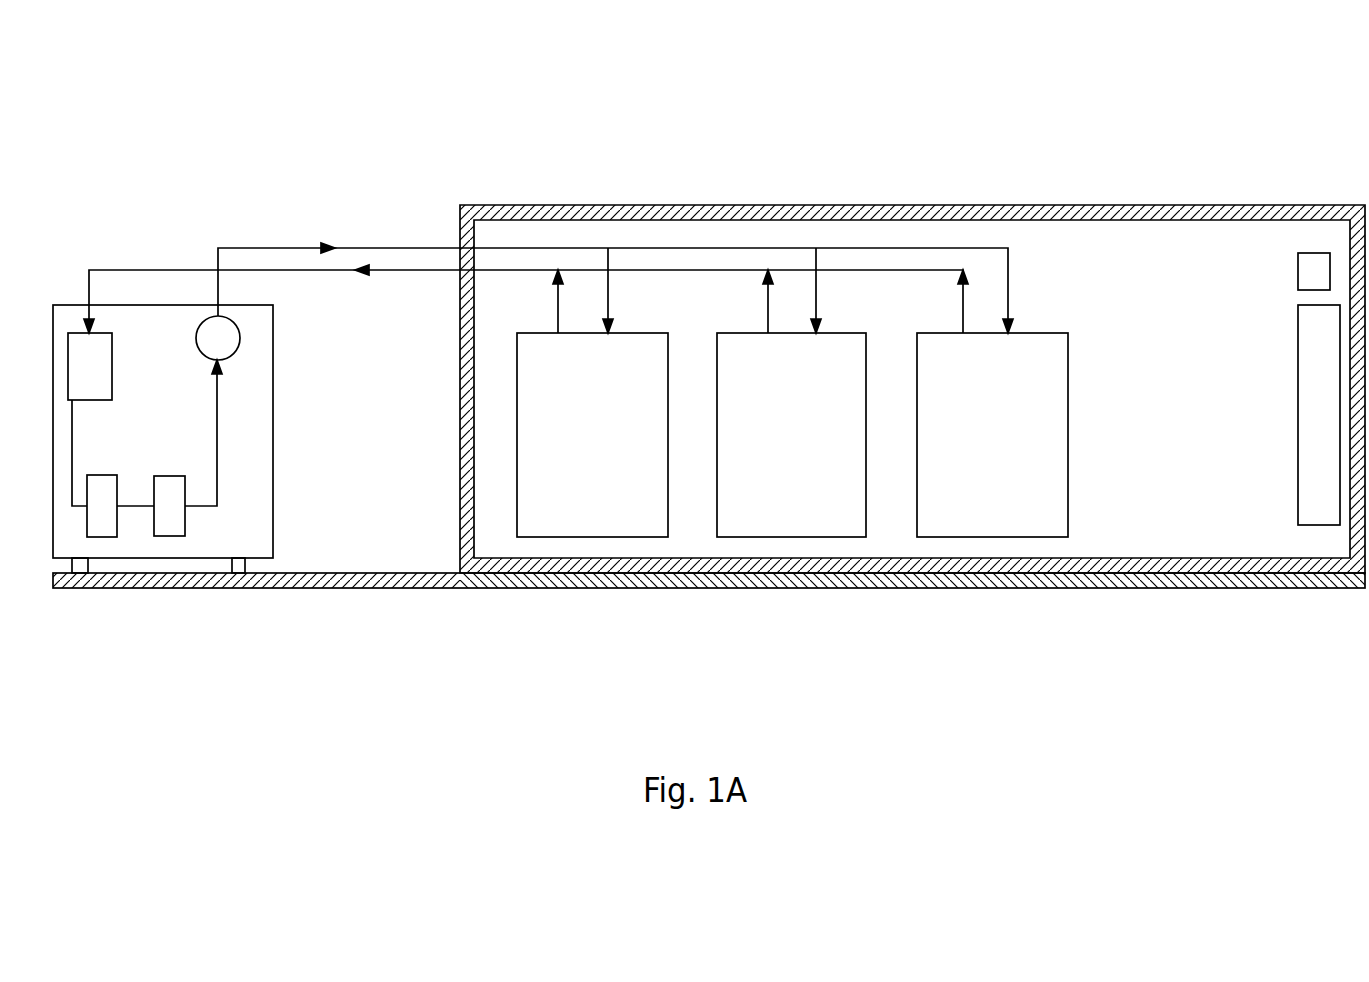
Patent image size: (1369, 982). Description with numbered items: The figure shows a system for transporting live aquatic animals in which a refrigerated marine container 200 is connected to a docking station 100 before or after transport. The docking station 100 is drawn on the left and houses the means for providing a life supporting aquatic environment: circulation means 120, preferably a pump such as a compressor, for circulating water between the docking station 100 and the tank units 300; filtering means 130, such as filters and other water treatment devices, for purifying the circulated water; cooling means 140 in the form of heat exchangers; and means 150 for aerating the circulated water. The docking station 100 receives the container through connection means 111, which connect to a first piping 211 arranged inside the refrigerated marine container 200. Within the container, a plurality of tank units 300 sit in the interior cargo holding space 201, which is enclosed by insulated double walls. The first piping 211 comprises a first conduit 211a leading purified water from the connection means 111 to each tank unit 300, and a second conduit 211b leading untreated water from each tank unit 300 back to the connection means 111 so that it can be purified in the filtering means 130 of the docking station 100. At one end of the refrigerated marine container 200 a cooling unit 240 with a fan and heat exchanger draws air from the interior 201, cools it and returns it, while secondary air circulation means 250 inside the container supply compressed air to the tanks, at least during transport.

The docking station 100 is at (93, 575).
The connection means 111 is at (370, 242).
The circulation means 120 is at (210, 333).
The filtering means 130 is at (82, 367).
The cooling means 140 is at (97, 487).
The aerating means 150 is at (170, 527).
The refrigerated marine container 200 is at (1148, 205).
The interior cargo holding space 201 is at (1080, 248).
The first piping 211 is at (743, 221).
The first conduit 211a is at (670, 243).
The second conduit 211b is at (883, 267).
The cooling unit 240 is at (1310, 497).
The secondary air circulation means 250 is at (1323, 258).
The tank unit 300 is at (563, 493).